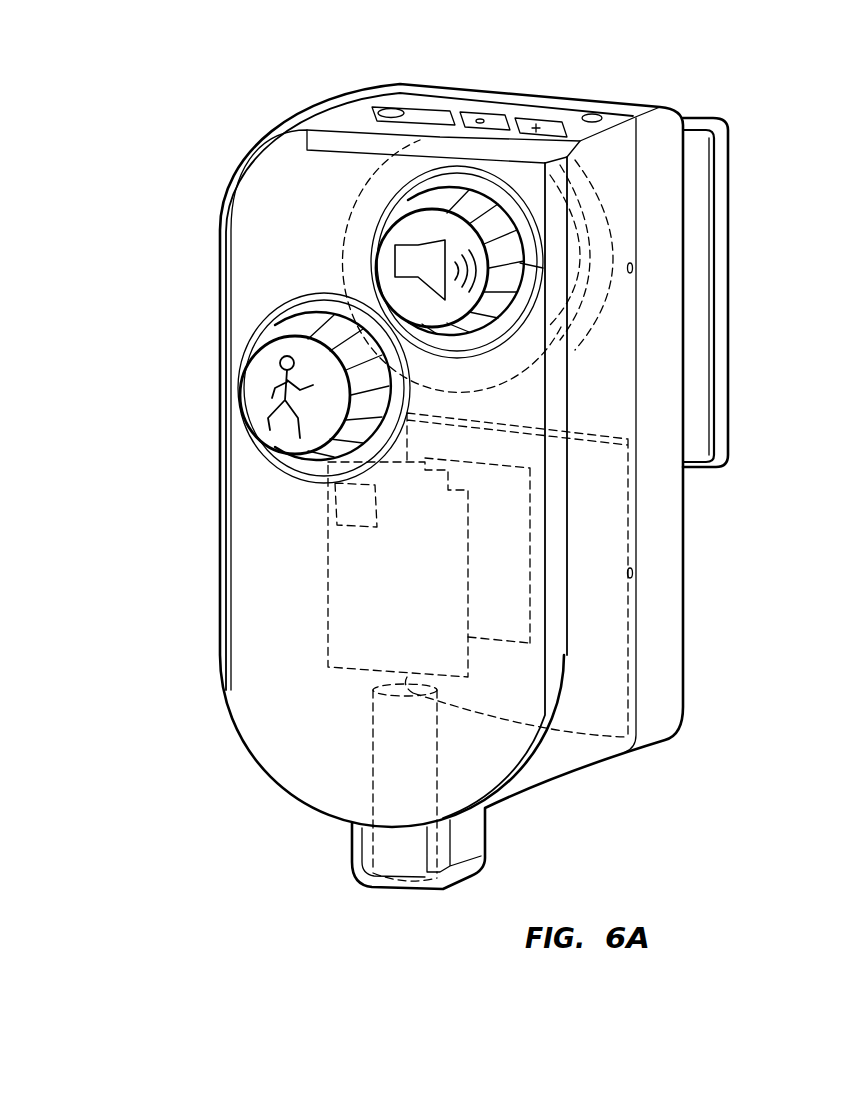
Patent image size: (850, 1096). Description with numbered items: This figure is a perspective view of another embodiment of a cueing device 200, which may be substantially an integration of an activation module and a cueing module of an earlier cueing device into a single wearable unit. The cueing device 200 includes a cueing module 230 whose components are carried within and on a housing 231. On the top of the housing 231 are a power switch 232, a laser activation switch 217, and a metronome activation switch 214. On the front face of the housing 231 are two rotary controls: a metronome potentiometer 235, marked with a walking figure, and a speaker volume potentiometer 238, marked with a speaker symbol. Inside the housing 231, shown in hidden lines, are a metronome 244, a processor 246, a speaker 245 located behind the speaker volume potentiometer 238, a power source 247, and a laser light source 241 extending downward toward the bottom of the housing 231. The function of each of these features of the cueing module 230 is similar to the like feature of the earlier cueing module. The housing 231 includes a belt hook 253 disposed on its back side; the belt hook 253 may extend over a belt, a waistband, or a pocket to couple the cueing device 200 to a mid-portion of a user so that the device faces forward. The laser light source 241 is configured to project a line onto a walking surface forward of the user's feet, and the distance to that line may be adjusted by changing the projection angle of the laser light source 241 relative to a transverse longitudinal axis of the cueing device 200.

The cueing device 200 is at (263, 97).
The metronome activation switch 214 is at (535, 127).
The laser activation switch 217 is at (488, 118).
The cueing module 230 is at (595, 103).
The housing 231 is at (438, 88).
The power switch 232 is at (372, 108).
The metronome potentiometer 235 is at (258, 387).
The speaker volume potentiometer 238 is at (402, 237).
The laser light source 241 is at (373, 766).
The metronome 244 is at (533, 557).
The speaker 245 is at (600, 183).
The processor 246 is at (468, 604).
The power source 247 is at (630, 492).
The belt hook 253 is at (729, 270).